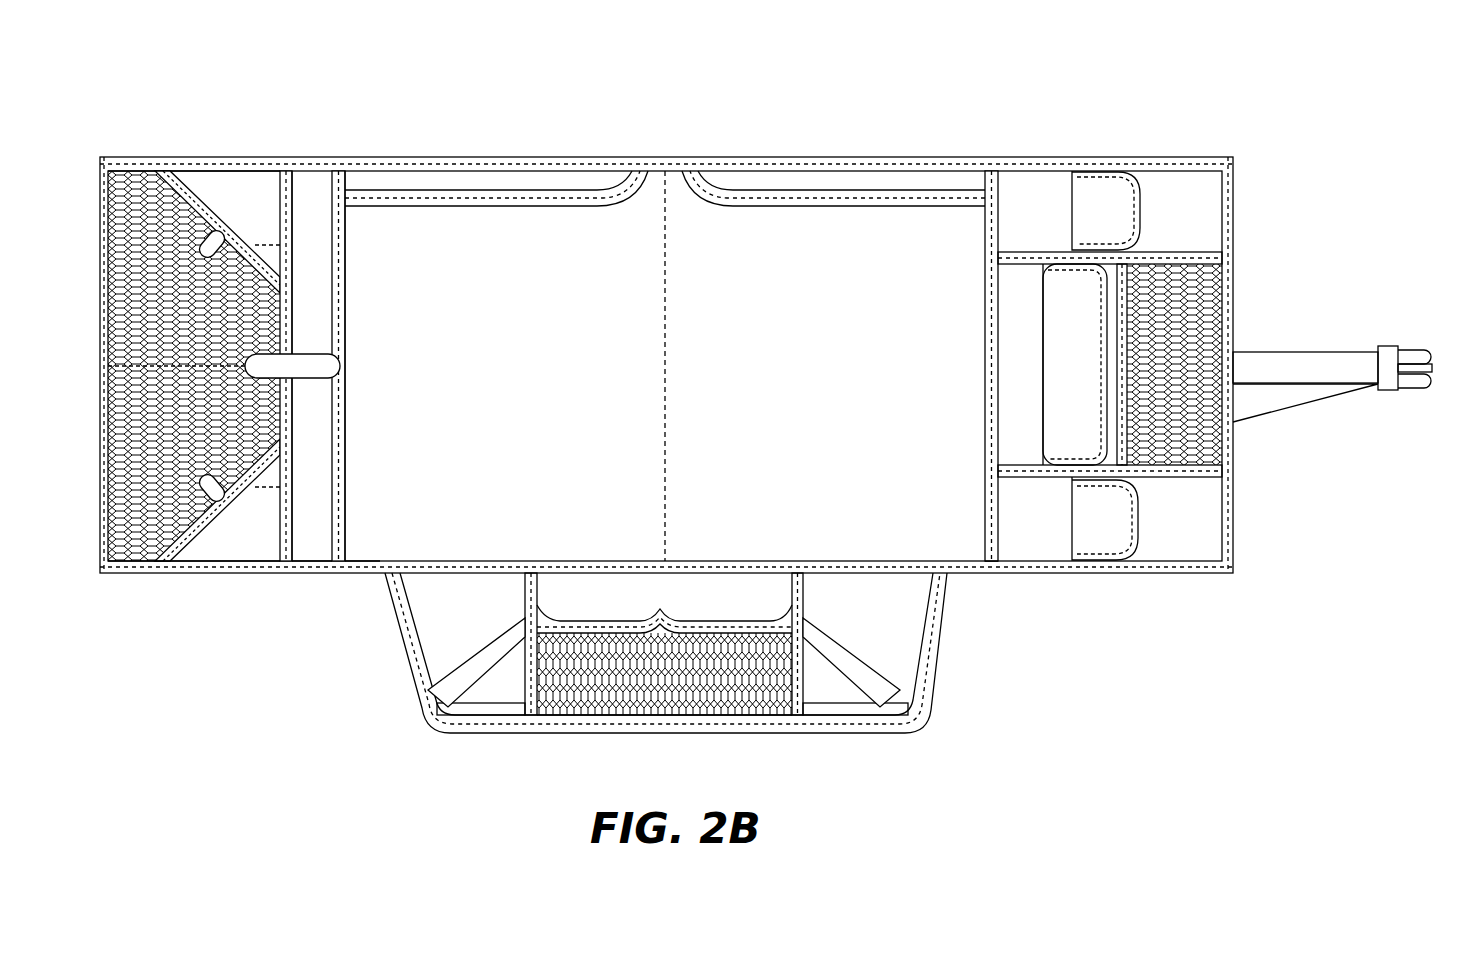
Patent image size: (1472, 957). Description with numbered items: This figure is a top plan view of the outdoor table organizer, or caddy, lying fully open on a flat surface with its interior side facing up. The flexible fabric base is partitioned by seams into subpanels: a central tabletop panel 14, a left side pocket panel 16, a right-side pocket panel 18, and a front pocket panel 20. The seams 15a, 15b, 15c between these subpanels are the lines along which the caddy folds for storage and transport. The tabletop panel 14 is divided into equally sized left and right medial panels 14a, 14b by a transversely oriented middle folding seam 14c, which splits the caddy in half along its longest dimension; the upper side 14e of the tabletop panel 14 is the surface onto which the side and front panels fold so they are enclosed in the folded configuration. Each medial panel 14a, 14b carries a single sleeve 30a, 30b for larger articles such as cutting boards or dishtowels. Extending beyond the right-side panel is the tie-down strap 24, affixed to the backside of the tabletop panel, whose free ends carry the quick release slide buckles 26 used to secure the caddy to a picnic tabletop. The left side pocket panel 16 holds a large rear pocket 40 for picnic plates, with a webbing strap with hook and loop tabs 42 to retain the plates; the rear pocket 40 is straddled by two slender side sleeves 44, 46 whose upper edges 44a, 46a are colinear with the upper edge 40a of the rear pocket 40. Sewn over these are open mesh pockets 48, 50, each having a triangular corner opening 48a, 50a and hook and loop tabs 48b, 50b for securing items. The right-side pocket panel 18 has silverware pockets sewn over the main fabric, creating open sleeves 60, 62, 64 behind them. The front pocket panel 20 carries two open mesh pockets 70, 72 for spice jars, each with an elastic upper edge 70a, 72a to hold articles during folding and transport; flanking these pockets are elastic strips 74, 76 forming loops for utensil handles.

The tabletop panel 14 is at (672, 160).
The left medial panel 14a is at (480, 230).
The right medial panel 14b is at (800, 230).
The middle folding seam 14c is at (663, 215).
The upper side 14e is at (767, 400).
The seam between subpanels 15a is at (320, 573).
The seam between subpanels 15b is at (985, 518).
The seam between subpanels 15c is at (148, 573).
The left side pocket panel 16 is at (160, 170).
The right-side pocket panel 18 is at (1163, 573).
The front pocket panel 20 is at (410, 672).
The tie-down strap 24 is at (1270, 352).
The quick release slide buckles 26 is at (1405, 348).
The sleeve 30a is at (433, 186).
The sleeve 30b is at (735, 185).
The rear pocket 40 is at (300, 258).
The upper edge of rear pocket 40a is at (338, 300).
The webbing strap with hook and loop tabs 42 is at (320, 362).
The side sleeve 44 is at (262, 168).
The upper edge of side sleeve 44a is at (300, 187).
The side sleeve 46 is at (262, 573).
The upper edge of side sleeve 46a is at (318, 573).
The open mesh pocket 48 is at (125, 215).
The triangular corner opening 48a is at (200, 182).
The hook and loop tabs 48b is at (222, 250).
The open mesh pocket 50 is at (118, 573).
The triangular corner opening 50a is at (215, 573).
The hook and loop tabs 50b is at (225, 573).
The open sleeve 60 is at (1068, 522).
The open sleeve 62 is at (1066, 208).
The open sleeve 64 is at (1040, 372).
The open mesh pocket 70 is at (625, 725).
The elastic upper edge 70a is at (518, 605).
The open mesh pocket 72 is at (712, 725).
The elastic upper edge 72a is at (792, 615).
The rear corner member 74 is at (437, 725).
The rear diagonal brace 76 is at (880, 705).